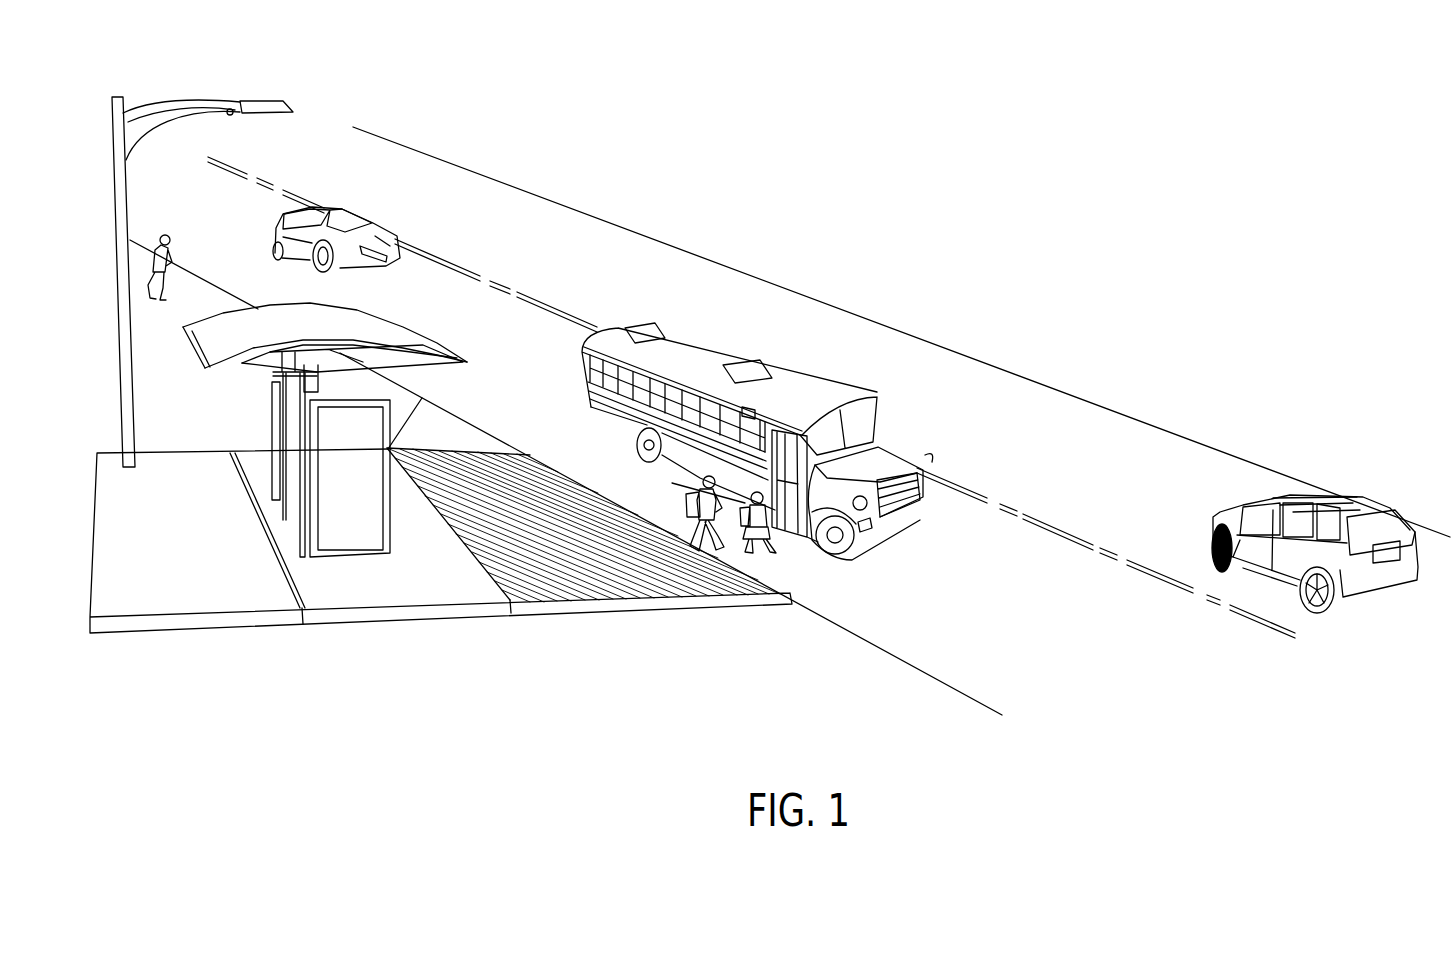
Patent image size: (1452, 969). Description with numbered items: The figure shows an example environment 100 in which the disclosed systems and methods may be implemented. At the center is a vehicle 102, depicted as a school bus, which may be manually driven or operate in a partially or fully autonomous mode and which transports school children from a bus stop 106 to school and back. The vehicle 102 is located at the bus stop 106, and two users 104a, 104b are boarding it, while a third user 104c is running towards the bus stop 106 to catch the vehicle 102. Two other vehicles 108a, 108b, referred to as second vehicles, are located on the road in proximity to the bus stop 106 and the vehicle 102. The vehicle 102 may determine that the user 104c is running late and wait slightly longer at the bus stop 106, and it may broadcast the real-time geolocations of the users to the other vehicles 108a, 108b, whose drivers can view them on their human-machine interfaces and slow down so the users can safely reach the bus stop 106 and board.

The environment 100 is at (1178, 120).
The vehicle 102 is at (807, 380).
The user 104a is at (757, 558).
The user 104b is at (693, 549).
The user 104c is at (163, 233).
The bus stop 106 is at (418, 335).
The other vehicle 108a is at (347, 207).
The other vehicle 108b is at (1237, 497).